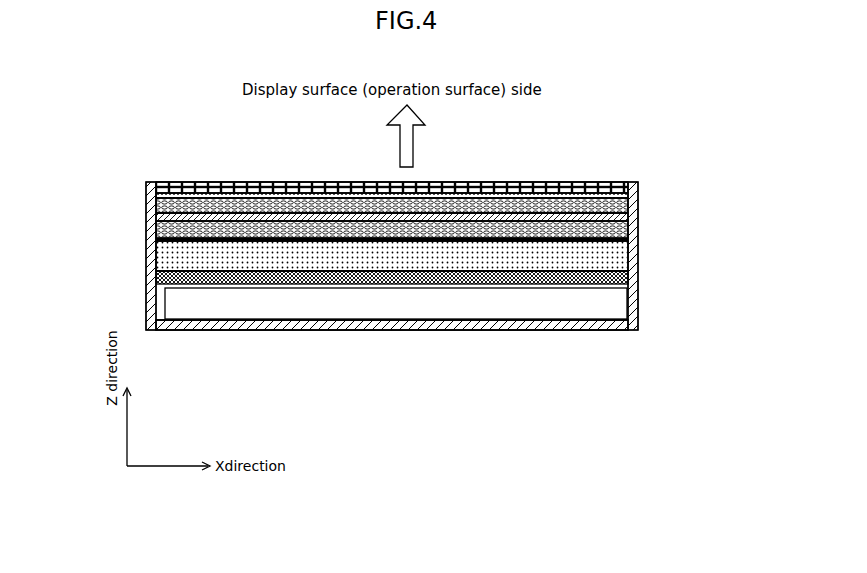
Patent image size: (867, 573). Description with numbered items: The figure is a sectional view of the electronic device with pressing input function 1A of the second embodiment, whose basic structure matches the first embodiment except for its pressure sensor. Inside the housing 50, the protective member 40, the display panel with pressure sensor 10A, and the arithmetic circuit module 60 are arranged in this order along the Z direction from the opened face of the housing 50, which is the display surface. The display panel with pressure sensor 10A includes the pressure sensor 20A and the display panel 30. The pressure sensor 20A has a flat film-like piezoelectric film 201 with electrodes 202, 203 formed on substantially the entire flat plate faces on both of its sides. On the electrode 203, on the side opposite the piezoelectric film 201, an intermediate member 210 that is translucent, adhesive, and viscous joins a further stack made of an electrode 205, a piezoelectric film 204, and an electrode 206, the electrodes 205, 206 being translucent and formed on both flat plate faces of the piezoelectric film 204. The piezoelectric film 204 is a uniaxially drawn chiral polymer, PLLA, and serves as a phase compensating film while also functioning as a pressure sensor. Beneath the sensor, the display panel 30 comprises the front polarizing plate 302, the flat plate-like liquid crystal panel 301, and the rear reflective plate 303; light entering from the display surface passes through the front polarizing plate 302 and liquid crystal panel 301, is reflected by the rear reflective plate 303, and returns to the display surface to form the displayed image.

The electronic device with pressing input function 1A is at (212, 154).
The display panel with pressure sensor 10A is at (710, 186).
The protective member 40 is at (601, 183).
The pressure sensor 20A is at (683, 179).
The electrode 202 is at (630, 187).
The piezoelectric film 201 is at (630, 195).
The electrode 203 is at (630, 205).
The intermediate member 210 is at (630, 217).
The electrode 205 is at (630, 229).
The piezoelectric film 204 is at (630, 255).
The electrode 206 is at (630, 277).
The display panel 30 is at (103, 208).
The front polarizing plate 302 is at (155, 213).
The liquid crystal panel 301 is at (155, 247).
The rear reflective plate 303 is at (155, 269).
The housing 50 is at (633, 315).
The arithmetic circuit module 60 is at (512, 322).